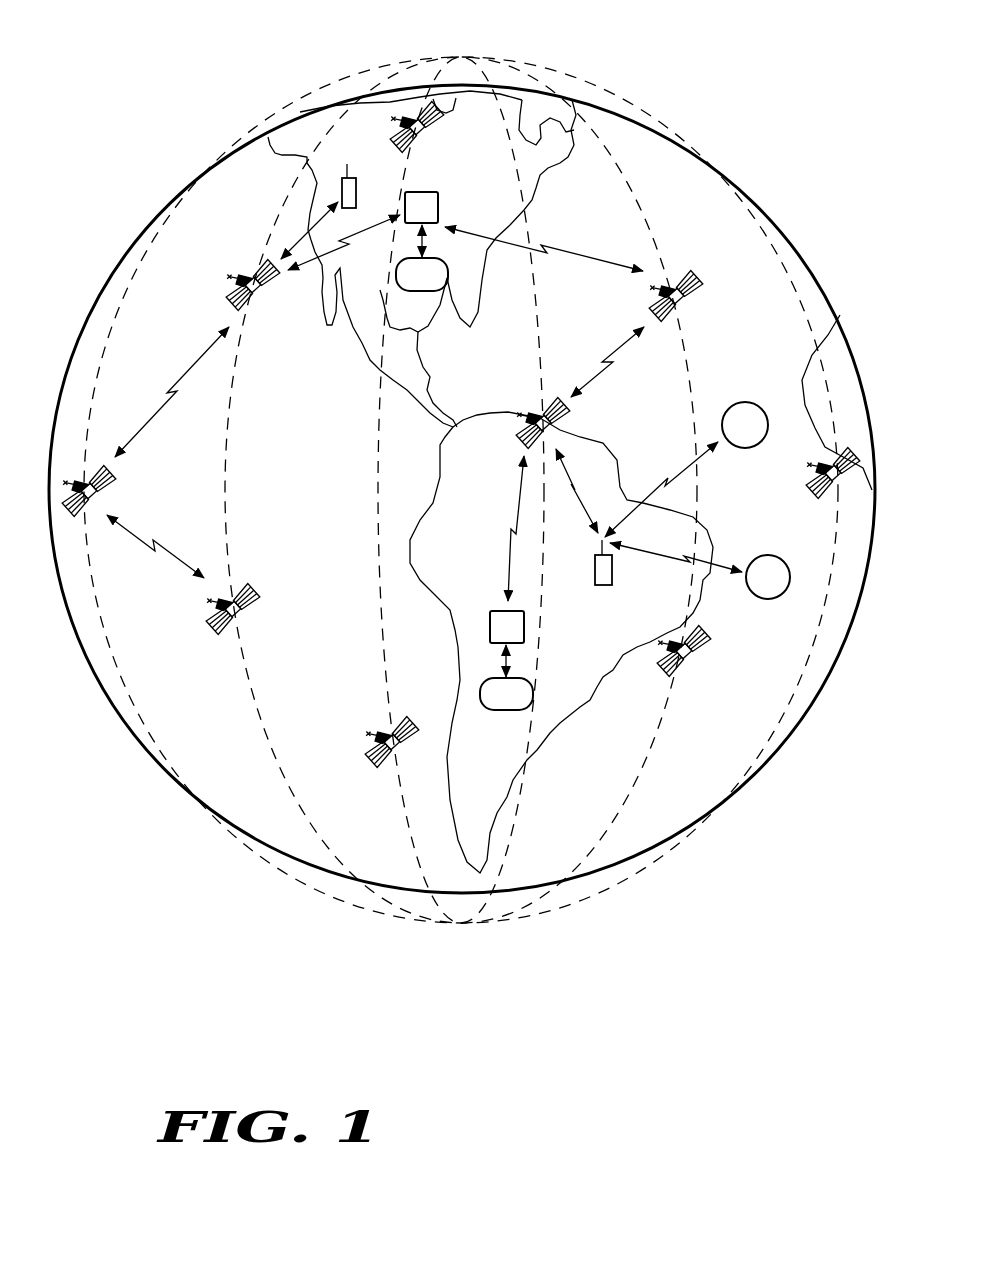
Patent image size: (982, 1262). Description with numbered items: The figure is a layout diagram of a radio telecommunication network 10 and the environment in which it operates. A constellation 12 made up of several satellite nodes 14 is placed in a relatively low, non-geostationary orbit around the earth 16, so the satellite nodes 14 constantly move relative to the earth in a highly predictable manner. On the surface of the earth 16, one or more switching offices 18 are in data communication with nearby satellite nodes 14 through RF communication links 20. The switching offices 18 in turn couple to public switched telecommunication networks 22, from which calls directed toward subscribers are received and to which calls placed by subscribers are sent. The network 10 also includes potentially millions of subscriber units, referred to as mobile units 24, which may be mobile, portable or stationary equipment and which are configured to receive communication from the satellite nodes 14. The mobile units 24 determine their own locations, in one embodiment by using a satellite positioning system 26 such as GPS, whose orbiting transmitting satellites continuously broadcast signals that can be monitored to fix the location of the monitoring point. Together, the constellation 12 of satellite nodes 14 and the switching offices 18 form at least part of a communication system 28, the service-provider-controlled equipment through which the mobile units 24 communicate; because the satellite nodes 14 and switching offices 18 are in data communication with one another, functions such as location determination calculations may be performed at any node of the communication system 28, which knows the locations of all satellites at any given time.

The radio telecommunication network 10 is at (462, 1040).
The constellation 12 is at (467, 55).
The satellite nodes 14 is at (264, 310).
The earth 16 is at (77, 351).
The switching offices (SOs) 18 is at (430, 190).
The RF communication links 20 is at (363, 235).
The public switched telecommunication networks (PSTNs) 22 is at (428, 292).
The mobile units 24 is at (352, 170).
The satellite positioning system 26 is at (750, 403).
The communication system 28 is at (169, 846).